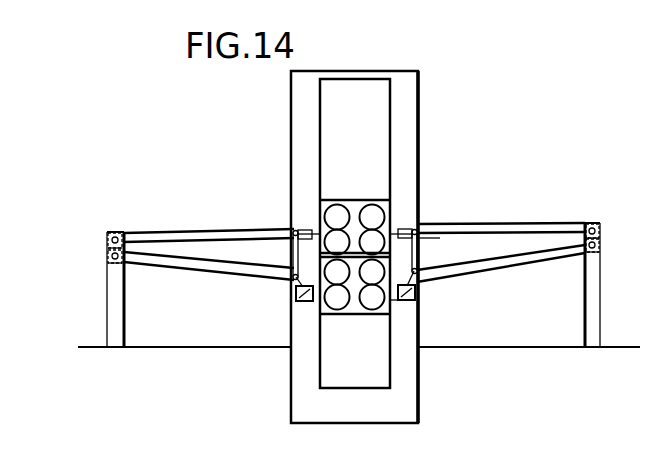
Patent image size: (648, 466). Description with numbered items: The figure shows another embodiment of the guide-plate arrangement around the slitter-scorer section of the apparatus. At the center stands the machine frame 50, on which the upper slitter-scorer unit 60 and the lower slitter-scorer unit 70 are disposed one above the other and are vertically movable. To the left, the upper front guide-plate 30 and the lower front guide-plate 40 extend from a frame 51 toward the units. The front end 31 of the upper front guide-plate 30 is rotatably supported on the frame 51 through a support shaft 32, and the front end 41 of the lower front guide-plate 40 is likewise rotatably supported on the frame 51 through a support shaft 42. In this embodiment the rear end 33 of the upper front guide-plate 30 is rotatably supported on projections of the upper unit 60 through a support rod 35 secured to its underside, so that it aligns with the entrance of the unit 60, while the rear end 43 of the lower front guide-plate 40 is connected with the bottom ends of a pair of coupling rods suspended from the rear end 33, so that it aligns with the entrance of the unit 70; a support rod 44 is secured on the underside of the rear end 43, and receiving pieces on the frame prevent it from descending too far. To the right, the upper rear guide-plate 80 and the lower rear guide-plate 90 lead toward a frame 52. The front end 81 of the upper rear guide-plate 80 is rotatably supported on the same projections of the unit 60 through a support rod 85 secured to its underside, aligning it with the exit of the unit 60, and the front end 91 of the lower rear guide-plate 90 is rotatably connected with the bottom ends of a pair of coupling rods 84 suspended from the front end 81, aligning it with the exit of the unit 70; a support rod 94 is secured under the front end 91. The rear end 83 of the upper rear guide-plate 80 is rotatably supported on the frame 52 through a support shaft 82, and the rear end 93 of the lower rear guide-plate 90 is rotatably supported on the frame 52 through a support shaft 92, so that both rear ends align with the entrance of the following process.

The upper front guide-plate 30 is at (193, 229).
The front end of upper front guide-plate 31 is at (106, 242).
The support shaft 32 is at (116, 232).
The rear end of upper front guide-plate 33 is at (313, 228).
The support rod 35 is at (303, 228).
The lower front guide-plate 40 is at (211, 280).
The front end of lower front guide-plate 41 is at (110, 251).
The support shaft 42 is at (113, 262).
The rear end of lower front guide-plate 43 is at (320, 313).
The support rod 44 is at (296, 296).
The machine frame 50 is at (297, 93).
The frame 51 is at (118, 302).
The frame 52 is at (588, 335).
The upper slitter-scorer unit 60 is at (347, 197).
The lower slitter-scorer unit 70 is at (355, 318).
The upper rear guide-plate 80 is at (509, 219).
The front end of upper rear guide-plate 81 is at (395, 228).
The support shaft 82 is at (591, 224).
The rear end of upper rear guide-plate 83 is at (600, 226).
The coupling rods 84 is at (432, 240).
The support rod 85 is at (405, 230).
The lower rear guide-plate 90 is at (549, 258).
The front end of lower rear guide-plate 91 is at (394, 300).
The support shaft 92 is at (600, 252).
The rear end of lower rear guide-plate 93 is at (602, 240).
The support rod 94 is at (416, 290).